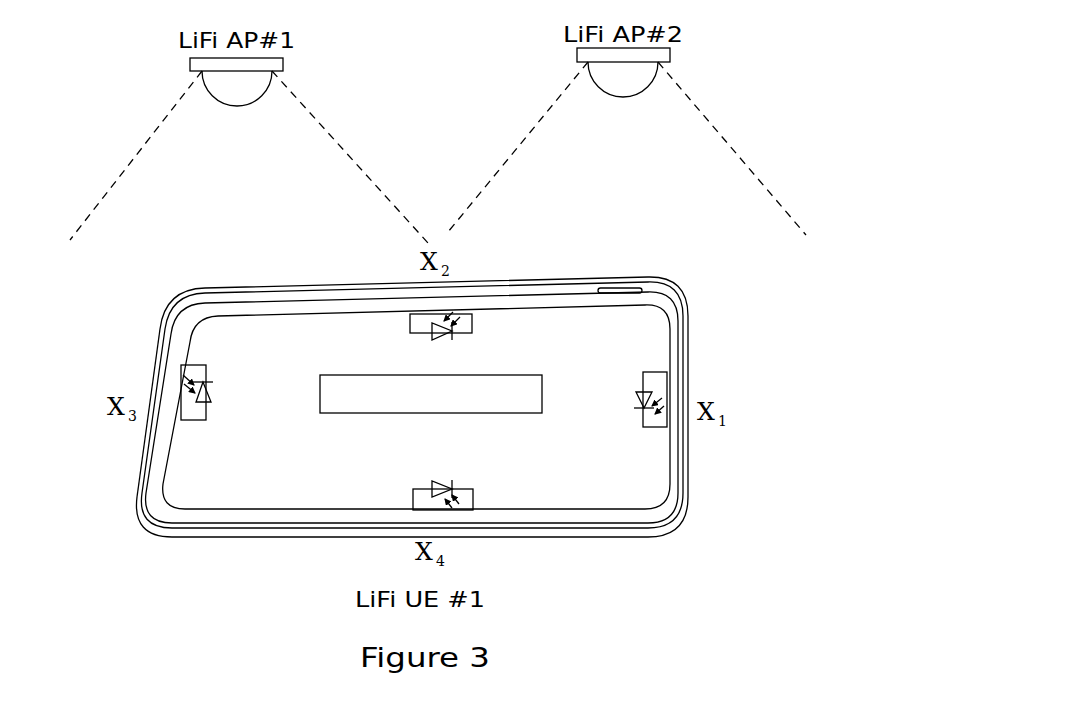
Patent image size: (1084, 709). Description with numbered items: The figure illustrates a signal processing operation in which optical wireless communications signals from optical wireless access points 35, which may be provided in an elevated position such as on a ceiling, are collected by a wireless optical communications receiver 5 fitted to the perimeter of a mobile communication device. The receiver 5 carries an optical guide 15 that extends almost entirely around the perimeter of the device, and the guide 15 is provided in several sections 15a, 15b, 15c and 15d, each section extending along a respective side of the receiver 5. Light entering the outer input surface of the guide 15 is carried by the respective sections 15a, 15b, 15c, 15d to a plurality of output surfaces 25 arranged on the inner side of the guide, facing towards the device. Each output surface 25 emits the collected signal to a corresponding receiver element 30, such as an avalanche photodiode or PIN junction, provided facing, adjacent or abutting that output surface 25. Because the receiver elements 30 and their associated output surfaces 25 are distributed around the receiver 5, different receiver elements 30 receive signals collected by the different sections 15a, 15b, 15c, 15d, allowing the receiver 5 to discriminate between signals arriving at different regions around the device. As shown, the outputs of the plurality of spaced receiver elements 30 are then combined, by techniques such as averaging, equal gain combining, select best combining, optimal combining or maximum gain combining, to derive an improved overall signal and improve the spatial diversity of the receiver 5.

The wireless optical communications receiver 5 is at (218, 532).
The optical guide 15 is at (270, 532).
The section of the optical guide 15a is at (322, 286).
The section of the optical guide 15b is at (690, 335).
The section of the optical guide 15c is at (526, 538).
The section of the optical guide 15d is at (153, 375).
The output surface 25 is at (472, 317).
The receiver element 30 is at (432, 337).
The optical wireless access point 35 is at (200, 70).